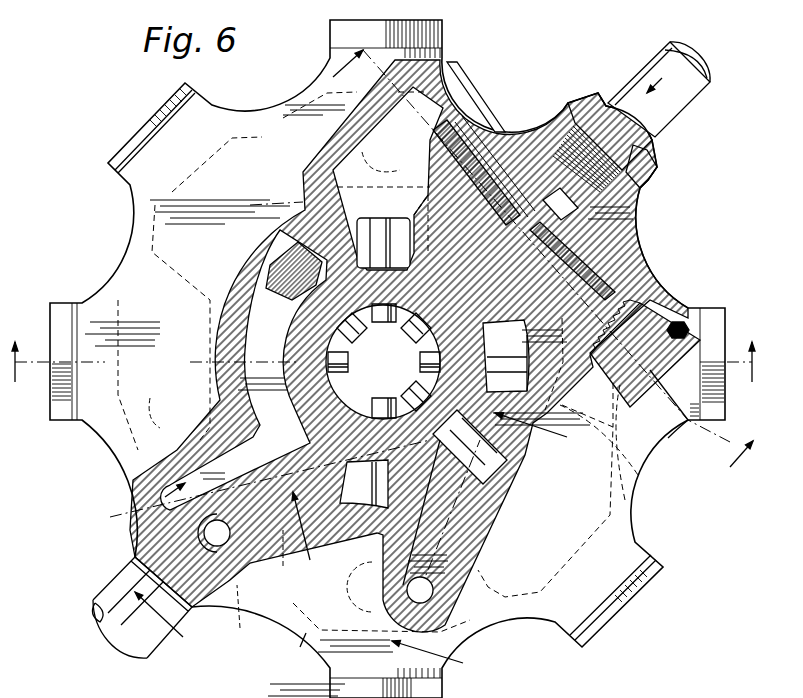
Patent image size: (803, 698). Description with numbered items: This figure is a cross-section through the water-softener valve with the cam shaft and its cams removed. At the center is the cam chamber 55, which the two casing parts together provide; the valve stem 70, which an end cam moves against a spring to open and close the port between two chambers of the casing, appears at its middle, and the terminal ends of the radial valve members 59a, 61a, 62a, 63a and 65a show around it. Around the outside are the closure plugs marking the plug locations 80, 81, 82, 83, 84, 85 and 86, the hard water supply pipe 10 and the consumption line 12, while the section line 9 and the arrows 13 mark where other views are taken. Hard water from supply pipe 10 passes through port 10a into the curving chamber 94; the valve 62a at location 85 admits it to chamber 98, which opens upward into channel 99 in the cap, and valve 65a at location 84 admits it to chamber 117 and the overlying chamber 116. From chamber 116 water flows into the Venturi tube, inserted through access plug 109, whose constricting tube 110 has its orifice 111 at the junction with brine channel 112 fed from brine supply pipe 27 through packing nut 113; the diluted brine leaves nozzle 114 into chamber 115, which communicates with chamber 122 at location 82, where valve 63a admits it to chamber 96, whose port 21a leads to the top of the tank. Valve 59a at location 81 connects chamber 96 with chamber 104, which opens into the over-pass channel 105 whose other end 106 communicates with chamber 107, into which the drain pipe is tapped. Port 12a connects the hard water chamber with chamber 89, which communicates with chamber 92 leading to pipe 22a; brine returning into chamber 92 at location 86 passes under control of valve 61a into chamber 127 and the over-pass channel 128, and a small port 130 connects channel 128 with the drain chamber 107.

The section line 9- 9 is at (385, 378).
The hard water supply pipe 10 is at (548, 262).
The port 10a is at (545, 457).
The consumption line 12 is at (210, 575).
The circular port 12a is at (152, 412).
The outlet 13 is at (493, 542).
The port 21a is at (388, 178).
The pipe 22a is at (381, 597).
The supply pipe 27 is at (662, 62).
The cam chamber 55 is at (376, 360).
The valve 59a is at (366, 337).
The valve member 61a is at (384, 401).
The valve 62a is at (510, 483).
The valve 63a is at (370, 230).
The valve 65a is at (520, 363).
The valve stem 70 is at (349, 362).
The plug location 80 is at (54, 410).
The plug location 81 is at (135, 134).
The plug location 82 is at (438, 38).
The plug location 83 is at (658, 170).
The plug location 84 is at (727, 322).
The plug location 85 is at (652, 568).
The plug location 86 is at (446, 688).
The chamber 89 is at (123, 277).
The chamber 92 is at (293, 649).
The curving chamber 94 is at (645, 480).
The chamber 96 is at (258, 148).
The chamber 98 is at (505, 456).
The channel 99 is at (463, 505).
The chamber 104 is at (275, 283).
The over-pass channel 105 is at (282, 358).
The channel end 106 is at (158, 487).
The chamber 107 is at (135, 520).
The access plug 109 is at (668, 438).
The constricting tube 110 is at (587, 253).
The orifice 111 is at (550, 222).
The brine channel 112 is at (567, 200).
The packing nut 113 is at (622, 142).
The nozzle 114 is at (463, 118).
The chamber 115 is at (440, 100).
The chamber 116 is at (613, 300).
The chamber 117 is at (488, 349).
The chamber 122 is at (418, 202).
The chamber 127 is at (364, 484).
The over-pass channel 128 is at (287, 558).
The small port 130 is at (216, 548).